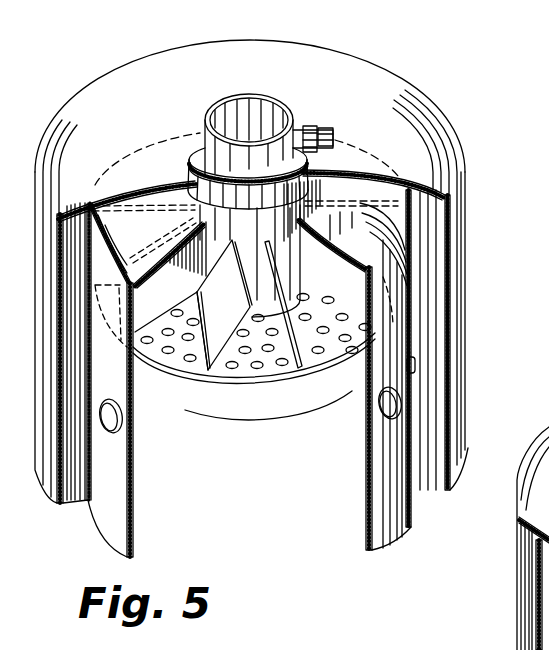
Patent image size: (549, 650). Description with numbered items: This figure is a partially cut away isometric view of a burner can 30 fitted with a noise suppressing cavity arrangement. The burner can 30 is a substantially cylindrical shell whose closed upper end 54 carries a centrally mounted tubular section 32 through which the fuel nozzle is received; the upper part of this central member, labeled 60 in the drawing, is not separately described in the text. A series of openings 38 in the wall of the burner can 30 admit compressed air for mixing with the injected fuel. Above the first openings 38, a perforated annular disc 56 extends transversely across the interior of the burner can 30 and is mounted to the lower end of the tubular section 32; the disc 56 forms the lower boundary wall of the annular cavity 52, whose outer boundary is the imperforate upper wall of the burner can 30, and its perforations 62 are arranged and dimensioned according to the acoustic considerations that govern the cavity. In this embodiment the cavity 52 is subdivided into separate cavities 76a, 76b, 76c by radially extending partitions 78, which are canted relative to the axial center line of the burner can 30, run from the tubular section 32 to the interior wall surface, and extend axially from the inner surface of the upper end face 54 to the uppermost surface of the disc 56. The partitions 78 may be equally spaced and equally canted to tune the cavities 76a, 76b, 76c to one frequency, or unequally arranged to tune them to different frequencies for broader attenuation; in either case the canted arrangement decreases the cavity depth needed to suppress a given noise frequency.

The burner can 30 is at (402, 335).
The tubular section 32 is at (305, 173).
The openings 38 is at (116, 440).
The annular cavity 52 is at (331, 343).
The closed upper end 54 is at (302, 262).
The perforated annular disc 56 is at (246, 378).
The central inlet pipe 60 is at (256, 117).
The perforations 62 is at (167, 350).
The separate cavity 76a is at (158, 328).
The separate cavity 76b is at (193, 357).
The separate cavity 76c is at (345, 284).
The radial partitions 78 is at (183, 287).